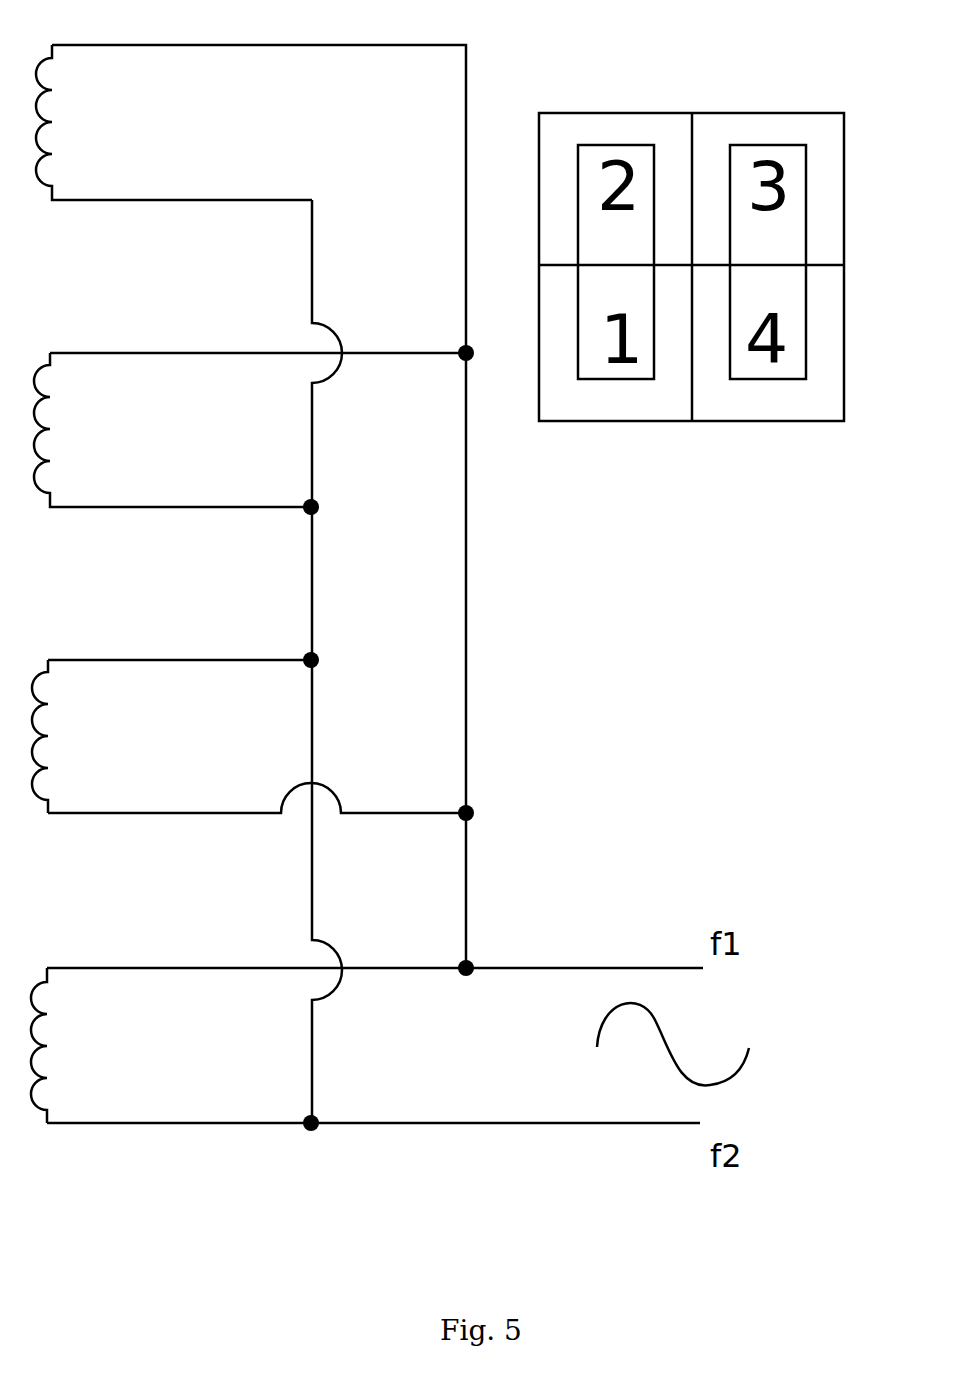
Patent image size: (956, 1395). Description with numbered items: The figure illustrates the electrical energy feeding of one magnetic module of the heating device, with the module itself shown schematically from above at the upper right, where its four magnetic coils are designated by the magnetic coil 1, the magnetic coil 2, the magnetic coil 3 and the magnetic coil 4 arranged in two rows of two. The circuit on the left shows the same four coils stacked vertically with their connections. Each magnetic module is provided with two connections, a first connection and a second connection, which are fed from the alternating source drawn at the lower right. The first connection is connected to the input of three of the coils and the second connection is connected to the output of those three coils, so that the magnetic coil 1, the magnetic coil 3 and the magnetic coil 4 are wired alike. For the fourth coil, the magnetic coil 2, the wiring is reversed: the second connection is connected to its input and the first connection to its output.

The magnetic coil 1 is at (71, 1052).
The magnetic coil 2 is at (171, 739).
The magnetic coil 3 is at (172, 433).
The magnetic coil 4 is at (174, 125).